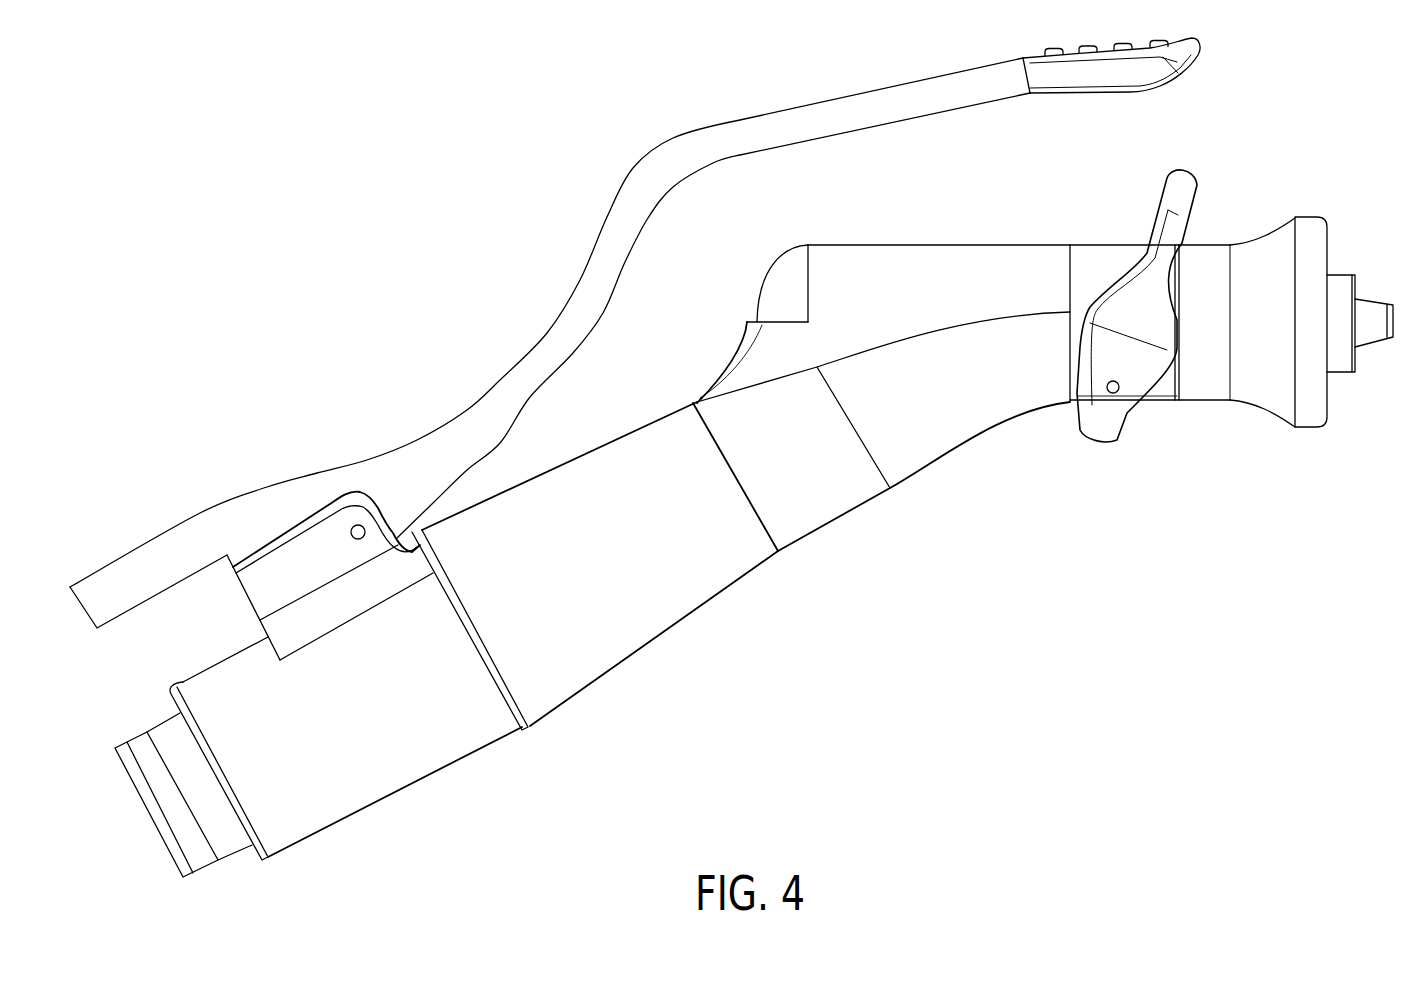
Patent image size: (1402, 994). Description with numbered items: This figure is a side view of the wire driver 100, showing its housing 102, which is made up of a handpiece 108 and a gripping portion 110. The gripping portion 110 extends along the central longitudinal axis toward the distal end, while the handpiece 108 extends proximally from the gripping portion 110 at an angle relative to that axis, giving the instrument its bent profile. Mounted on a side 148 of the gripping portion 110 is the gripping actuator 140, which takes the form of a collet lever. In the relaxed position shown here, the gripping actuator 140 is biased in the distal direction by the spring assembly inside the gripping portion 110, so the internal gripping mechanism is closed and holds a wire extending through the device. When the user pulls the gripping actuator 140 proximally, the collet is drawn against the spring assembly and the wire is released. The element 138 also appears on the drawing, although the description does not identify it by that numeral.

The wire driver 100 is at (306, 198).
The housing 102 is at (749, 652).
The handpiece 108 is at (420, 773).
The gripping portion 110 is at (1185, 401).
The blade 138 is at (675, 138).
The gripping actuator 140 is at (1205, 146).
The side 148 is at (1207, 380).